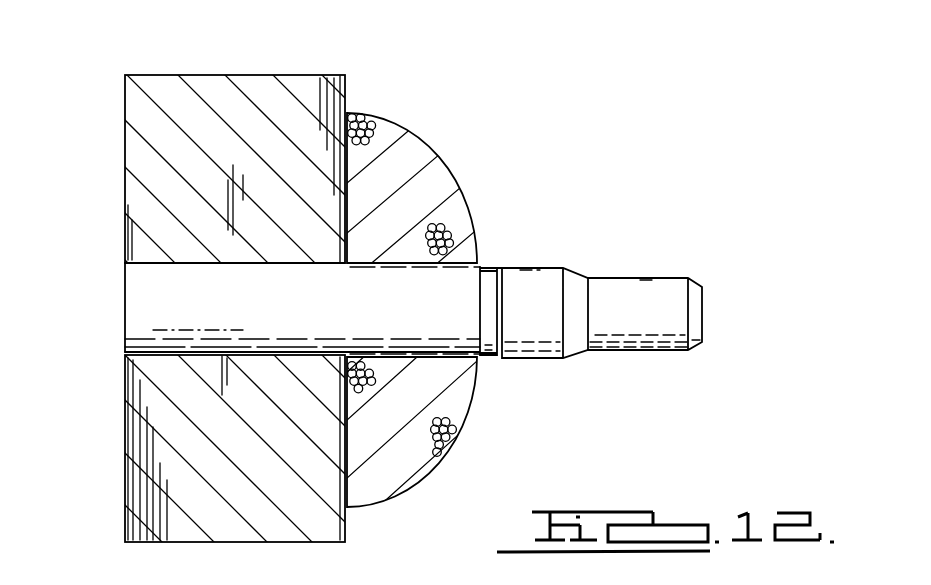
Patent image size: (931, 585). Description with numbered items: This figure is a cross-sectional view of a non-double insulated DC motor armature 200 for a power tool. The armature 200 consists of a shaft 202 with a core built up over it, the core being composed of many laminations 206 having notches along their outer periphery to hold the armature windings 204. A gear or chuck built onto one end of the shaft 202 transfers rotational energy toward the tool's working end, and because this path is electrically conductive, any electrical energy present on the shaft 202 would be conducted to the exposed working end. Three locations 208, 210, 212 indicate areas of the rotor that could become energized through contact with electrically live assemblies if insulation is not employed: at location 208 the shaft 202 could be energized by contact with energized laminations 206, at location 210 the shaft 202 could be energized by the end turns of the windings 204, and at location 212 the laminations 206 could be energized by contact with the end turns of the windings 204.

The non-double insulated DC motor armature 200 is at (488, 95).
The shaft 202 is at (643, 277).
The armature windings 204 is at (466, 198).
The laminations 206 is at (250, 77).
The location 208 is at (147, 262).
The location 210 is at (435, 362).
The location 212 is at (347, 495).